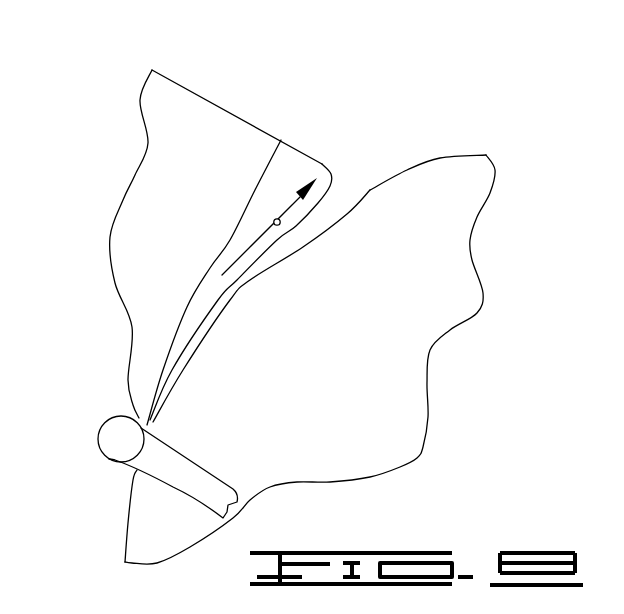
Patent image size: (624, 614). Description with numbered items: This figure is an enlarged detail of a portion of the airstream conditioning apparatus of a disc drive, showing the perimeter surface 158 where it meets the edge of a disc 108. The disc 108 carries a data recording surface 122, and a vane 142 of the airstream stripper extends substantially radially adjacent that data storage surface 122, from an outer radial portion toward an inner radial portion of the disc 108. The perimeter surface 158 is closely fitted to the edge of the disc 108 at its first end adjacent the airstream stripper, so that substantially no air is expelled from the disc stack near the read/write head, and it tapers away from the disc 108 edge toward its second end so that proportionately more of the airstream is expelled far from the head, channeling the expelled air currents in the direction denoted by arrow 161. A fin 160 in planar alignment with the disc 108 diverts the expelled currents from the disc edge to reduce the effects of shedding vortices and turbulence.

The disc 108 is at (403, 175).
The data recording surface 122 is at (443, 230).
The vane 142 is at (185, 494).
The perimeter surface 158 is at (190, 91).
The fin 160 is at (220, 299).
The arrow 161 is at (274, 220).